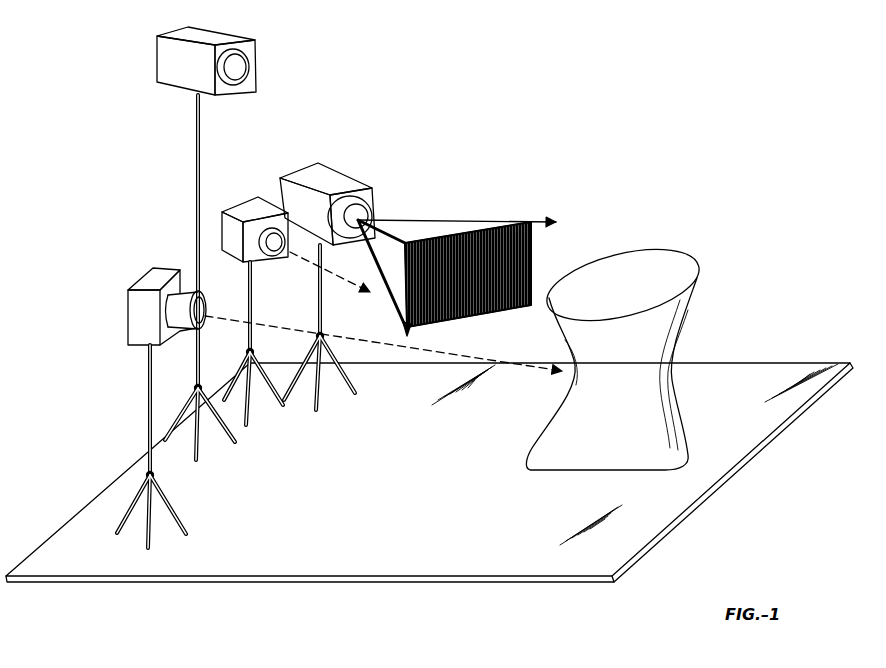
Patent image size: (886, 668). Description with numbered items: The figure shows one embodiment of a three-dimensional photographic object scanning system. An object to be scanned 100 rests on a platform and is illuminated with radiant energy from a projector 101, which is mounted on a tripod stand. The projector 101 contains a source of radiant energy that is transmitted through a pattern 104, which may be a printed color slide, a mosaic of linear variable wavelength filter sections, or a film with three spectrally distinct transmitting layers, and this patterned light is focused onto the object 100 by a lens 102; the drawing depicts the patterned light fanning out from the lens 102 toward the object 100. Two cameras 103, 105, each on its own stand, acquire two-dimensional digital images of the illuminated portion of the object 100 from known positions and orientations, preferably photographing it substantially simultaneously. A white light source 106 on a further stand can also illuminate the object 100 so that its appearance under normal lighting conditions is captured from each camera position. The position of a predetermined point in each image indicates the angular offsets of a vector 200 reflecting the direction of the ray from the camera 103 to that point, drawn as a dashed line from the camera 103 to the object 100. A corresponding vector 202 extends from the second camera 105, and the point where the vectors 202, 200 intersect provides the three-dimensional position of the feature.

The object to be scanned 100 is at (676, 249).
The projector 101 is at (342, 175).
The lens 102 is at (373, 213).
The camera 103 is at (140, 283).
The pattern 104 is at (538, 256).
The camera 105 is at (239, 210).
The white light source 106 is at (154, 62).
The vector 200 is at (388, 344).
The vector 202 is at (302, 263).